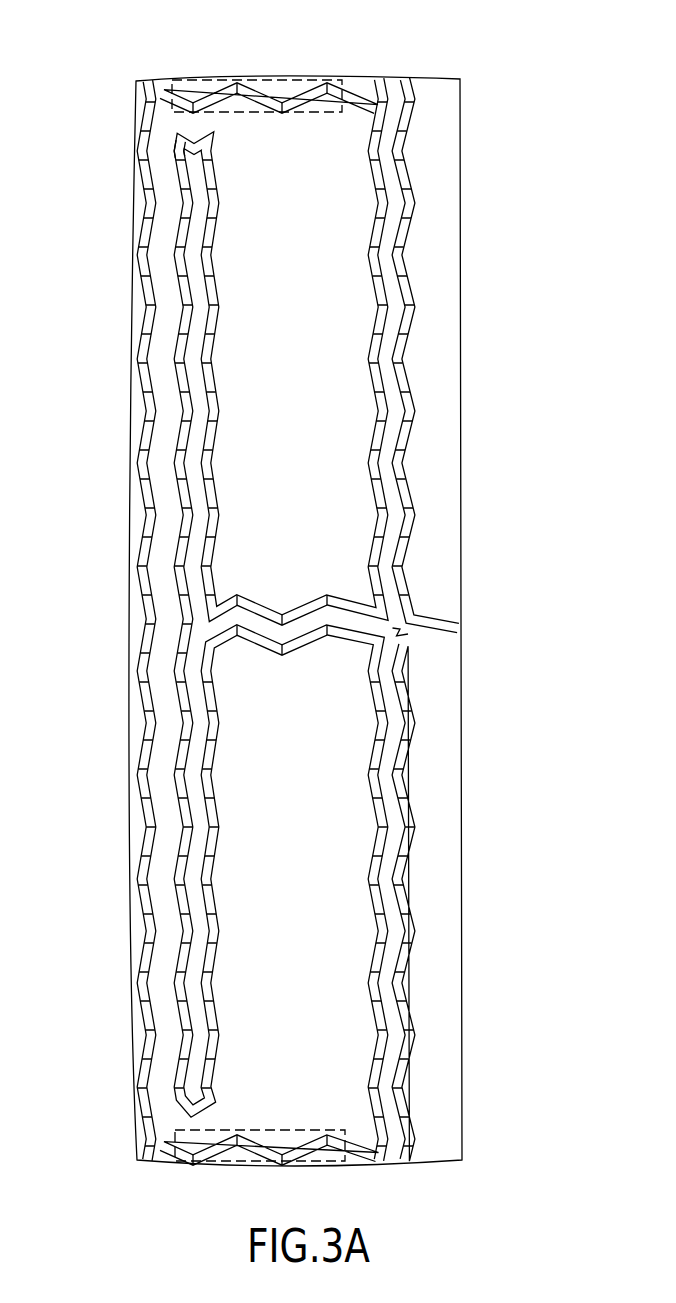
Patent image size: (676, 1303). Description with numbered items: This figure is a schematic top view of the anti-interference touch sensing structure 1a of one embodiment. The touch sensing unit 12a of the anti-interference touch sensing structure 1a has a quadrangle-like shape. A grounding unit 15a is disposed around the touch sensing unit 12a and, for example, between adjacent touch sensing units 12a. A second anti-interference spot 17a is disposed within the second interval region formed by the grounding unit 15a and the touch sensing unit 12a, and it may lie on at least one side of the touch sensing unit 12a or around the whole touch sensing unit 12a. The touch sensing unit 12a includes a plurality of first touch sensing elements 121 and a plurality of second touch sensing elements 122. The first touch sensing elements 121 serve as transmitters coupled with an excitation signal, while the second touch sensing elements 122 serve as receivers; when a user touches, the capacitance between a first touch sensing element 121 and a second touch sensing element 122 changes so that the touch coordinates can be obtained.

The anti-interference touch sensing structure 1a is at (139, 36).
The touch sensing unit 12a is at (442, 122).
The grounding unit 15a is at (200, 218).
The second anti-interference spot 17a is at (103, 80).
The first touch sensing element 121 is at (257, 413).
The second touch sensing element 122 is at (445, 353).